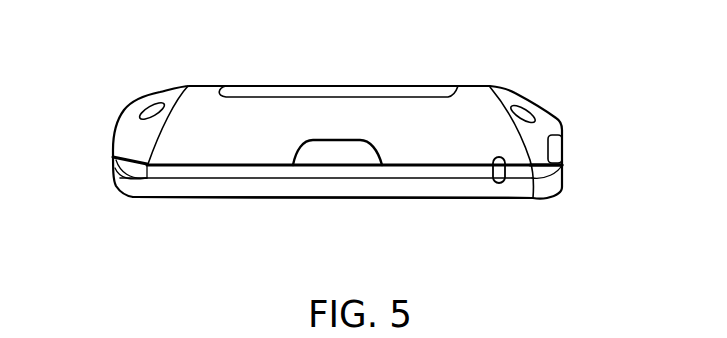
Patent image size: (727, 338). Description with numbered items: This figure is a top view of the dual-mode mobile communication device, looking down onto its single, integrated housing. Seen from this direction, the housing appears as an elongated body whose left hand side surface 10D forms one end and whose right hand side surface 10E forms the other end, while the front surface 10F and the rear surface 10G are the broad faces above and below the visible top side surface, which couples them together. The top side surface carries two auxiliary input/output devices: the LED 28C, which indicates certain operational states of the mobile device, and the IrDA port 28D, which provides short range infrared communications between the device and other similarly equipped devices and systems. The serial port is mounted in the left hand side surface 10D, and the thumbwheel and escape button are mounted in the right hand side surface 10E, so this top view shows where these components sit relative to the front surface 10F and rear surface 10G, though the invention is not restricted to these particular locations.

The left hand side surface 10D is at (113, 140).
The right hand side surface 10E is at (562, 145).
The front surface 10F is at (207, 198).
The rear surface 10G is at (458, 86).
The LED 28C is at (492, 175).
The IrDA port 28D is at (335, 147).